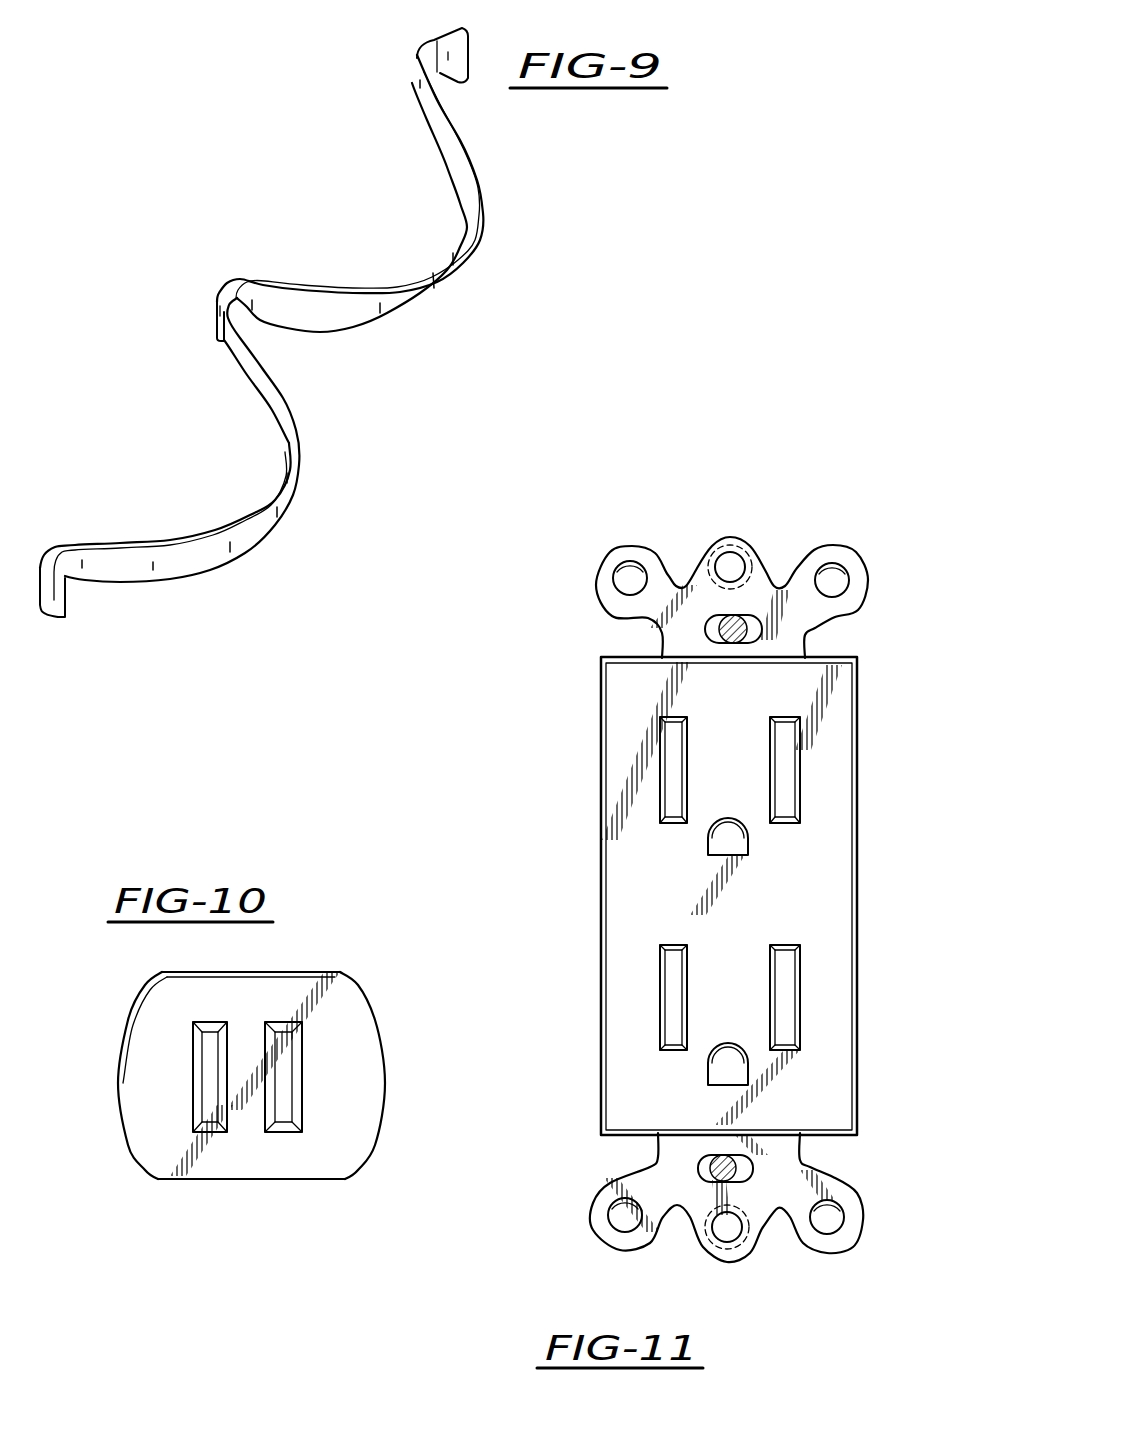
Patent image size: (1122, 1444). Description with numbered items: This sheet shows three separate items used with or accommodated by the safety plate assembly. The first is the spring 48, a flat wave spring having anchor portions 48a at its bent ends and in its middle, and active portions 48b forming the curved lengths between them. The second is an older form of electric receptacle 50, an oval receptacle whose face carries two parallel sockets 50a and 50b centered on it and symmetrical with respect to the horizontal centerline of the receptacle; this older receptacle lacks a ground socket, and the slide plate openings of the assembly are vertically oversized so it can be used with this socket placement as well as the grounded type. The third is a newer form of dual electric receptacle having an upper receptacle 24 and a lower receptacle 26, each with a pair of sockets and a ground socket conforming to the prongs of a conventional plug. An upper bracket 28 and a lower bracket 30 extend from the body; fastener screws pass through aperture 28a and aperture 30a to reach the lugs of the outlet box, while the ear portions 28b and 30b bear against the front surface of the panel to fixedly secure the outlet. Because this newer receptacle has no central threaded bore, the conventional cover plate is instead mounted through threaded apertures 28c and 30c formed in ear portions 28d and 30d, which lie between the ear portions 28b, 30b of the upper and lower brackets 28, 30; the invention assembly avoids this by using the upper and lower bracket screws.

In FIG. 11, the upper receptacle 24 is at (648, 753).
In FIG. 11, the lower receptacle 26 is at (647, 998).
In FIG. 11, the upper bracket 28 is at (615, 634).
In FIG. 11, the aperture 28a is at (763, 630).
In FIG. 11, the ear portion 28b is at (605, 550).
In FIG. 11, the threaded aperture 28c is at (733, 568).
In FIG. 11, the ear portion 28d is at (716, 538).
In FIG. 11, the lower bracket 30 is at (575, 1218).
In FIG. 11, the aperture 30a is at (748, 1168).
In FIG. 11, the ear portion 30b is at (637, 1248).
In FIG. 11, the threaded aperture 30c is at (710, 1228).
In FIG. 11, the ear portion 30d is at (757, 1246).
In FIG. 9, the spring 48 is at (230, 198).
In FIG. 9, the anchor portions 48a is at (427, 38).
In FIG. 9, the active portions 48b is at (470, 247).
In FIG. 10, the older receptacle 50 is at (216, 1186).
In FIG. 10, the socket 50a is at (207, 1077).
In FIG. 10, the socket 50b is at (290, 1100).